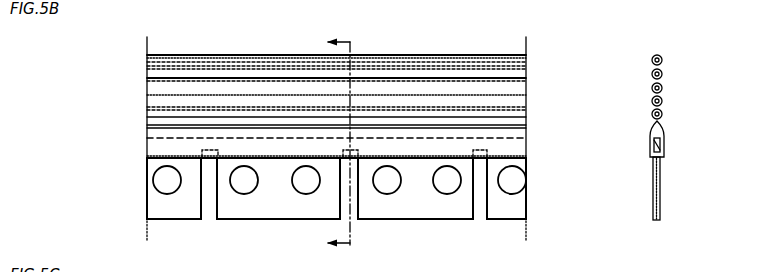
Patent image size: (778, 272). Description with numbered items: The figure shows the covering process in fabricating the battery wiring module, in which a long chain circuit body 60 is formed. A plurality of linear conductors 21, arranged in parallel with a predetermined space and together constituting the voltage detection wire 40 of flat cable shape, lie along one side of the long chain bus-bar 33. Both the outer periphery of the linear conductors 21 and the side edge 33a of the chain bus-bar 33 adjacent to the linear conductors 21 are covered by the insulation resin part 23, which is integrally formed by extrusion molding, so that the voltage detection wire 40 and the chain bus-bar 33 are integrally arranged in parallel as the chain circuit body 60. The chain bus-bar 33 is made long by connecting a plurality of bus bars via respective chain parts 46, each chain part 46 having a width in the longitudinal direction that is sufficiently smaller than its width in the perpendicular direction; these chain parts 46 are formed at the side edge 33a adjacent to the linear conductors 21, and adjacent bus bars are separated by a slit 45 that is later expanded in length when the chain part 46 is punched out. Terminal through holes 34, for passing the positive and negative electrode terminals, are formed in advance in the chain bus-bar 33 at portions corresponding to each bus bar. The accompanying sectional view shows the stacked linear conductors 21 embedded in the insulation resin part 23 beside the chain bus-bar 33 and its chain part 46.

The linear conductors 21 is at (663, 74).
The insulation resin part 23 is at (441, 61).
The chain bus-bar 33 is at (230, 222).
The side edge 33a is at (175, 140).
The terminal through holes 34 is at (302, 170).
The voltage detection wire 40 is at (535, 55).
The slit 45 is at (213, 174).
The chain parts 46 is at (215, 148).
The chain circuit body 60 is at (277, 55).